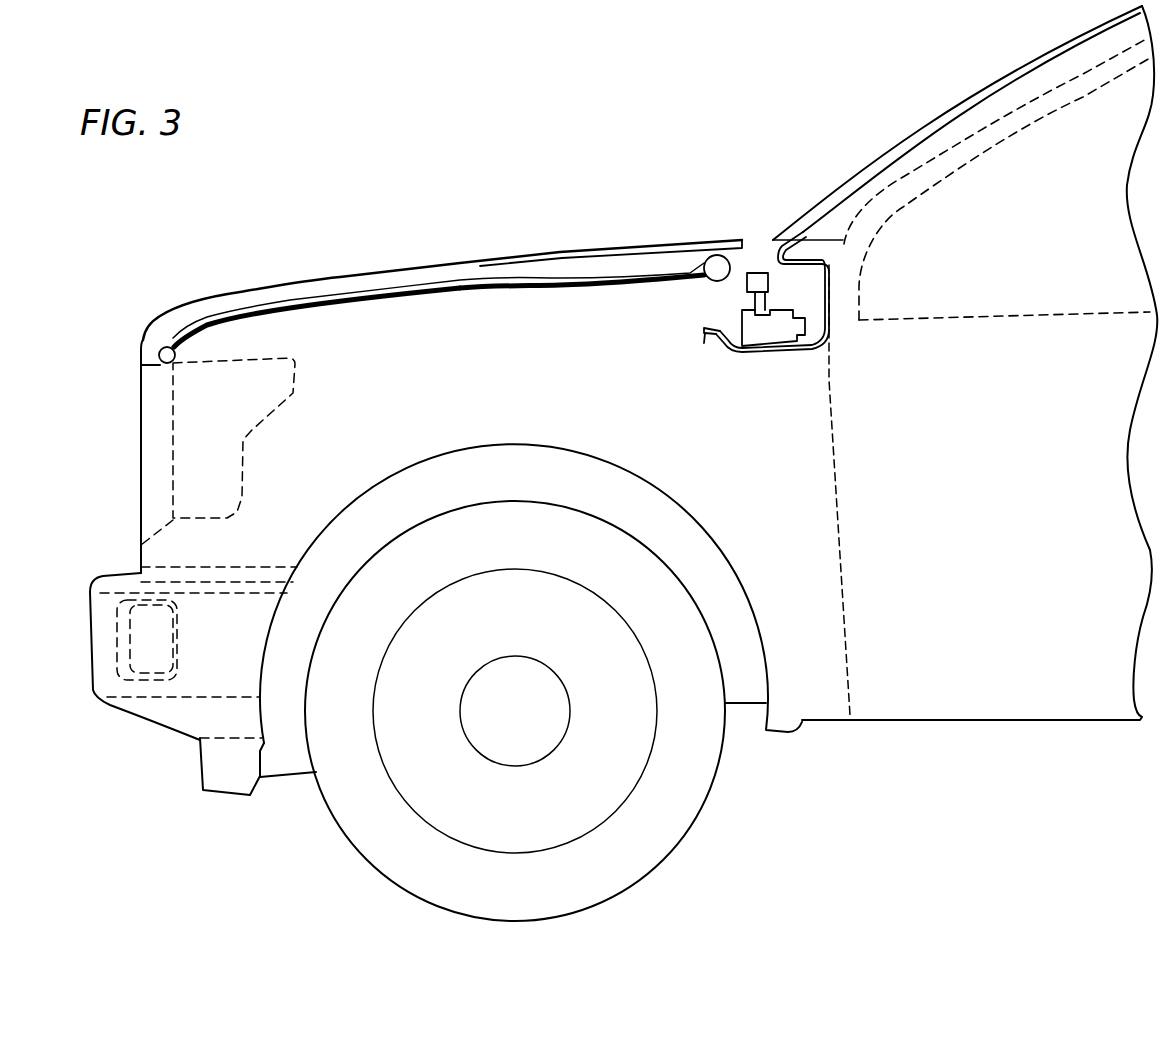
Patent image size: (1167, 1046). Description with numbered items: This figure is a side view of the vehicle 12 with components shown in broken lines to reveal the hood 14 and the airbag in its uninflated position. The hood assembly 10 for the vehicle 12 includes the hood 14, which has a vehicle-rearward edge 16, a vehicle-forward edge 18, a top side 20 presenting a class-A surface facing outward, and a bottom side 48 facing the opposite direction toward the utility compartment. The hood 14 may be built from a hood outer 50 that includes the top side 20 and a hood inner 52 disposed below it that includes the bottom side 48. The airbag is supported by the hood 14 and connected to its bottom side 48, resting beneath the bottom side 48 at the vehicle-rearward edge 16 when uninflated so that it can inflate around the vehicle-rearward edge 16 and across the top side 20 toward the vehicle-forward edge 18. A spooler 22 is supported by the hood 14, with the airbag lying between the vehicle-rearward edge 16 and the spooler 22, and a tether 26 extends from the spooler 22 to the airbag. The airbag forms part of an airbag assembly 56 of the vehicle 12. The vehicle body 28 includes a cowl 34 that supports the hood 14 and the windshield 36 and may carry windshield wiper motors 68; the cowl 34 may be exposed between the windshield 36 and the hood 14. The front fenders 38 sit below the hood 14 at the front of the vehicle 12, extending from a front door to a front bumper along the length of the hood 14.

The hood assembly 10 is at (497, 206).
The vehicle 12 is at (913, 82).
The hood 14 is at (287, 292).
The vehicle-rearward edge 16 is at (747, 238).
The vehicle-forward edge 18 is at (140, 356).
The top side 20 is at (352, 272).
The spooler 22 is at (177, 355).
The tether 26 is at (400, 300).
The vehicle body 28 is at (800, 604).
The cowl 34 is at (838, 295).
The windshield 36 is at (900, 146).
The front fenders 38 is at (762, 447).
The bottom side 48 is at (445, 280).
The hood outer 50 is at (578, 244).
The hood inner 52 is at (600, 290).
The airbag assembly 56 is at (713, 284).
The windshield wiper motors 68 is at (736, 330).